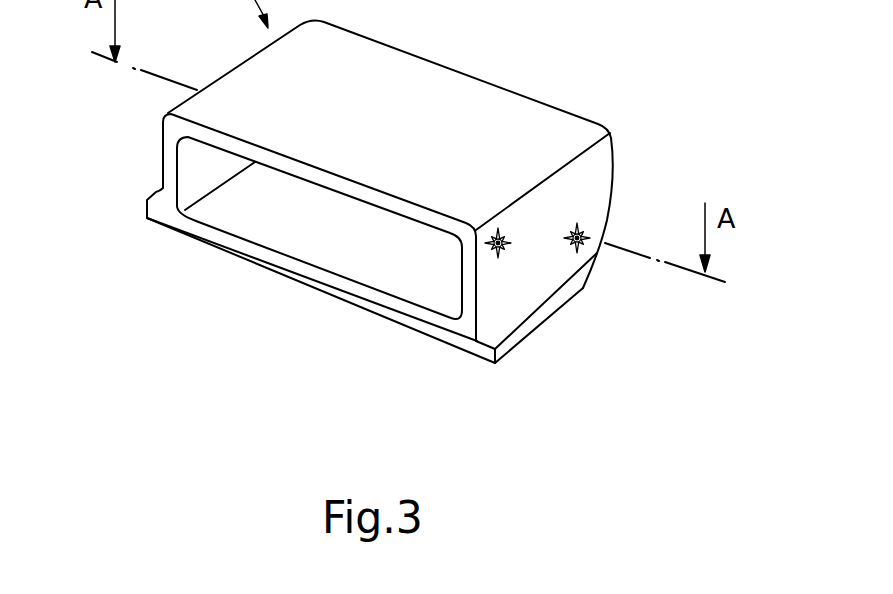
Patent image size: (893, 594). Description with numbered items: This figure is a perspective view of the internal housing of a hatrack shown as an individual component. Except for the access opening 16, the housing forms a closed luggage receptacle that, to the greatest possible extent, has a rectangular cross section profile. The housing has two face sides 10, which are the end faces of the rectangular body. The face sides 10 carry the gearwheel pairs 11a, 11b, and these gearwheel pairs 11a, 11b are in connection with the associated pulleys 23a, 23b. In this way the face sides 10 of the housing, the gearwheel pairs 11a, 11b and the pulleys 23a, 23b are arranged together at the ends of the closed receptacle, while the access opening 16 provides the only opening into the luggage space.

The face side 10 is at (592, 175).
The access opening 16 is at (286, 237).
The gearwheel pair 11a is at (574, 253).
The gearwheel pair 11b is at (487, 249).
The pulley 23a is at (584, 249).
The pulley 23b is at (496, 258).